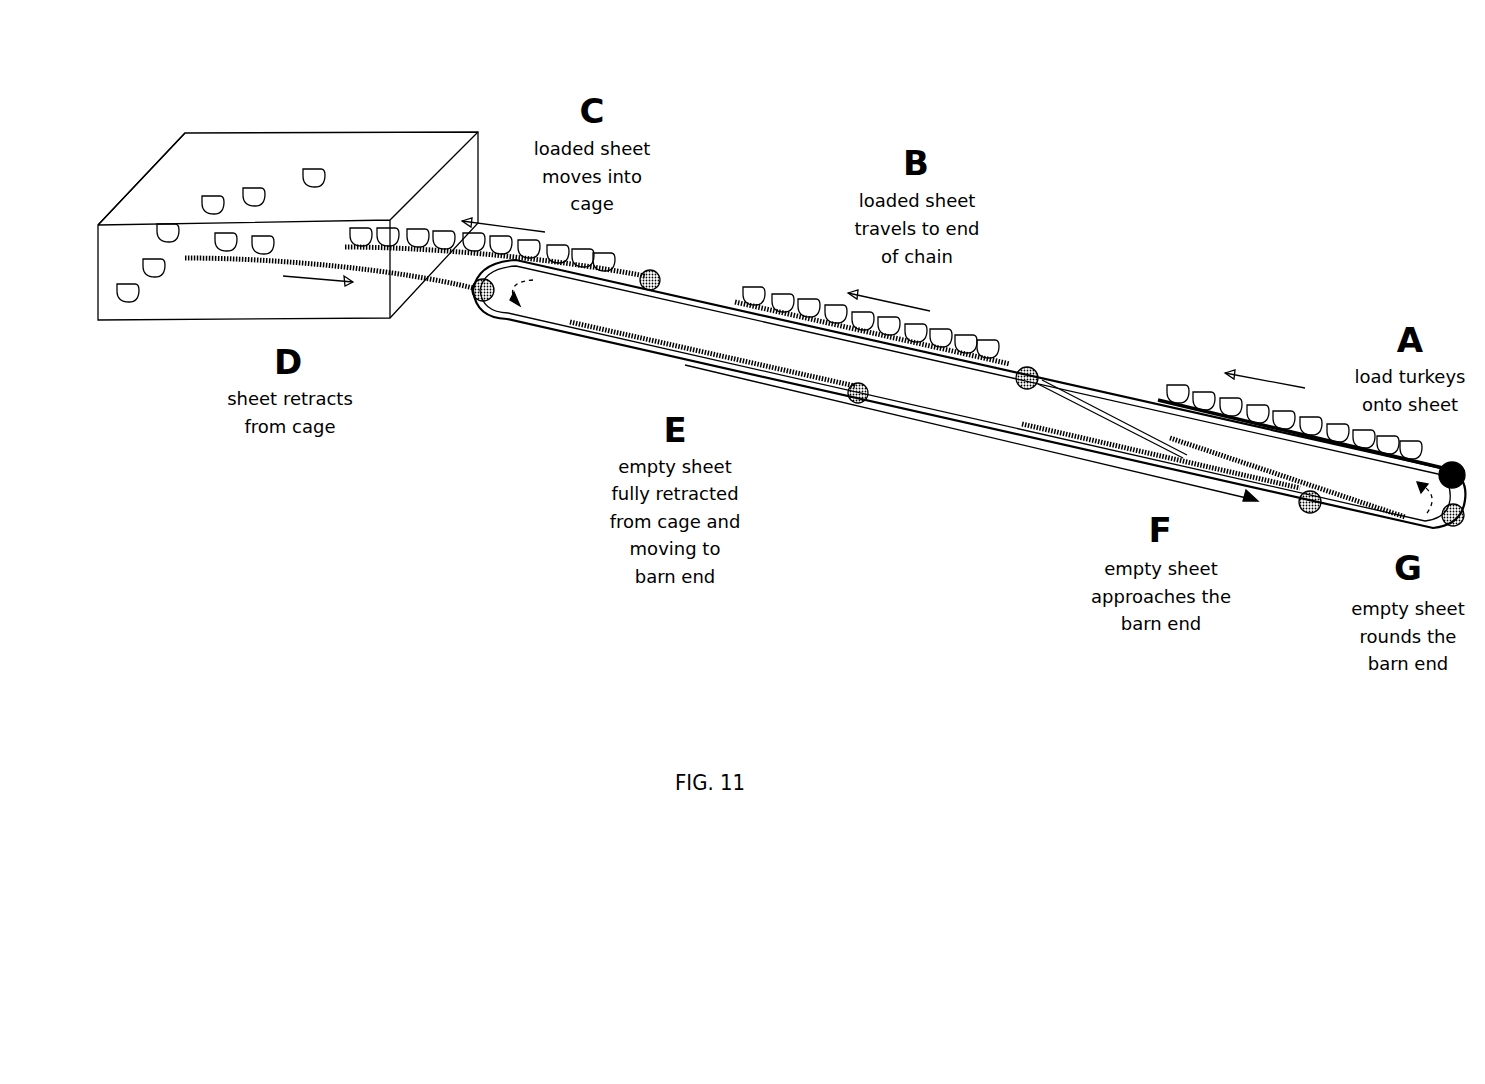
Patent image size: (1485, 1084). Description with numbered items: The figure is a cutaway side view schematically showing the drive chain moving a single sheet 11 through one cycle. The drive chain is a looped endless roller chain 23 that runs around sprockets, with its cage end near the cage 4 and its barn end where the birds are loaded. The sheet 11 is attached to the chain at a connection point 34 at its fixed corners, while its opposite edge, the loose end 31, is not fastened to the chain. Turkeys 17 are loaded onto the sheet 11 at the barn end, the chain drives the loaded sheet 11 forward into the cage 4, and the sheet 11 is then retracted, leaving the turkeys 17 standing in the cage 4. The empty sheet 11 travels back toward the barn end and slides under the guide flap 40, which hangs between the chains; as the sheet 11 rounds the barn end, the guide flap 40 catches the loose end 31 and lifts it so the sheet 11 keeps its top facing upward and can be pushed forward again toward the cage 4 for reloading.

The cage 4 is at (422, 131).
The sheet 11 is at (1062, 430).
The turkeys 17 is at (605, 251).
The endless roller chain 23 is at (1123, 397).
The loose end 31 is at (1037, 422).
The connection point 34 is at (1312, 513).
The guide flap 40 is at (1118, 411).